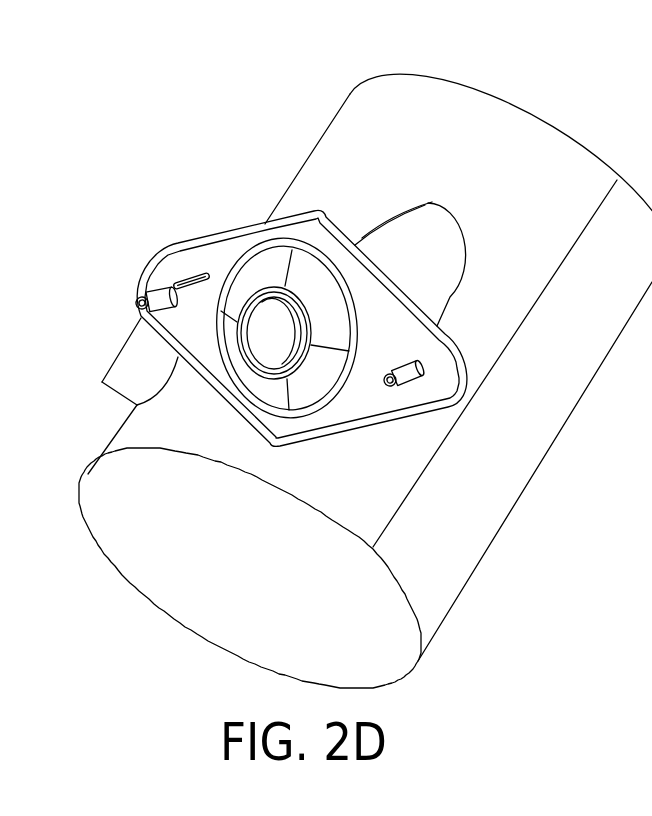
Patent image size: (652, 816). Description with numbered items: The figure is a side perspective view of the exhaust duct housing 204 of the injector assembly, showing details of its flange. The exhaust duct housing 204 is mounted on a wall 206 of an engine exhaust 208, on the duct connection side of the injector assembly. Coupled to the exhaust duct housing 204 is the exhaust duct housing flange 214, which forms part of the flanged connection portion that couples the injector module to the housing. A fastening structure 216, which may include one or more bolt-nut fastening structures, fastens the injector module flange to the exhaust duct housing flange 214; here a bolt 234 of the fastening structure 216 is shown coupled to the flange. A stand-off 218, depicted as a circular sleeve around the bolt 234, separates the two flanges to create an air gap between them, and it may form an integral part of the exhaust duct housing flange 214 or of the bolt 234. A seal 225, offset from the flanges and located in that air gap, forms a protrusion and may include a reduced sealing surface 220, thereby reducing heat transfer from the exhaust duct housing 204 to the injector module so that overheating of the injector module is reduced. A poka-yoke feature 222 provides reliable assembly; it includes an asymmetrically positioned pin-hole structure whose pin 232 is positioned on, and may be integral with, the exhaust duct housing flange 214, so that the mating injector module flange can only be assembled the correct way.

The exhaust duct housing 204 is at (286, 110).
The wall 206 is at (370, 377).
The engine exhaust 208 is at (250, 568).
The exhaust duct housing flange 214 is at (319, 232).
The fastening structure 216 is at (106, 313).
The stand-off 218 is at (420, 368).
The reduced sealing surface 220 is at (288, 308).
The poka-yoke feature 222 is at (167, 231).
The seal 225 is at (303, 353).
The pin 232 is at (185, 281).
The bolt 234 is at (390, 386).